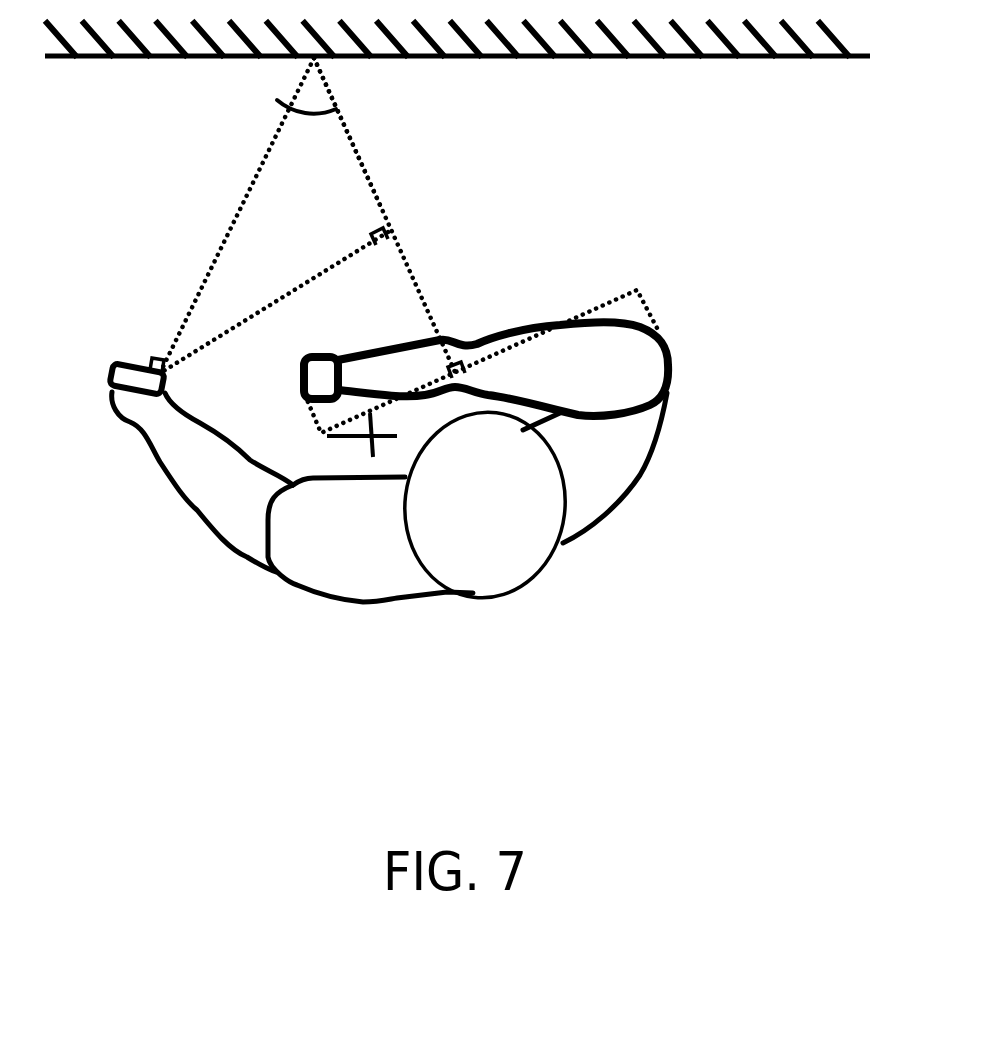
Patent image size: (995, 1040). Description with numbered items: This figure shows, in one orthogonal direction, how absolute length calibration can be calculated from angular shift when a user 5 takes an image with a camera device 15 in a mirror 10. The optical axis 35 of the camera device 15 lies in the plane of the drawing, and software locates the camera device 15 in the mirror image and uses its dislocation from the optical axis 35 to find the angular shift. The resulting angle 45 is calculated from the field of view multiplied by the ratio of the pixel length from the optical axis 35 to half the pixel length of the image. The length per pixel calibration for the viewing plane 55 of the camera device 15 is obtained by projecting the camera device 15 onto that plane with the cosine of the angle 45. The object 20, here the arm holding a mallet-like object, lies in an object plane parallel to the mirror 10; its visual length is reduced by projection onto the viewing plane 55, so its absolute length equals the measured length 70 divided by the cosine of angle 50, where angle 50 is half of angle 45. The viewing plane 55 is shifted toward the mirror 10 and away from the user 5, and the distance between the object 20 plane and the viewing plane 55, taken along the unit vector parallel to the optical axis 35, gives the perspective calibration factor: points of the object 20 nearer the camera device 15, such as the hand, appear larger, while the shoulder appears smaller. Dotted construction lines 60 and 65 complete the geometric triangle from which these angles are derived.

The user 5 is at (562, 553).
The mirror 10 is at (742, 65).
The camera device 15 is at (110, 366).
The object 20 is at (672, 395).
The camera device optical axis 35 is at (429, 288).
The angle 45 is at (276, 104).
The angle 50 is at (368, 448).
The viewing plane 55 is at (326, 274).
The first distance line 60 is at (198, 264).
The vertical reference line 65 is at (372, 176).
The measured length 70 is at (600, 291).